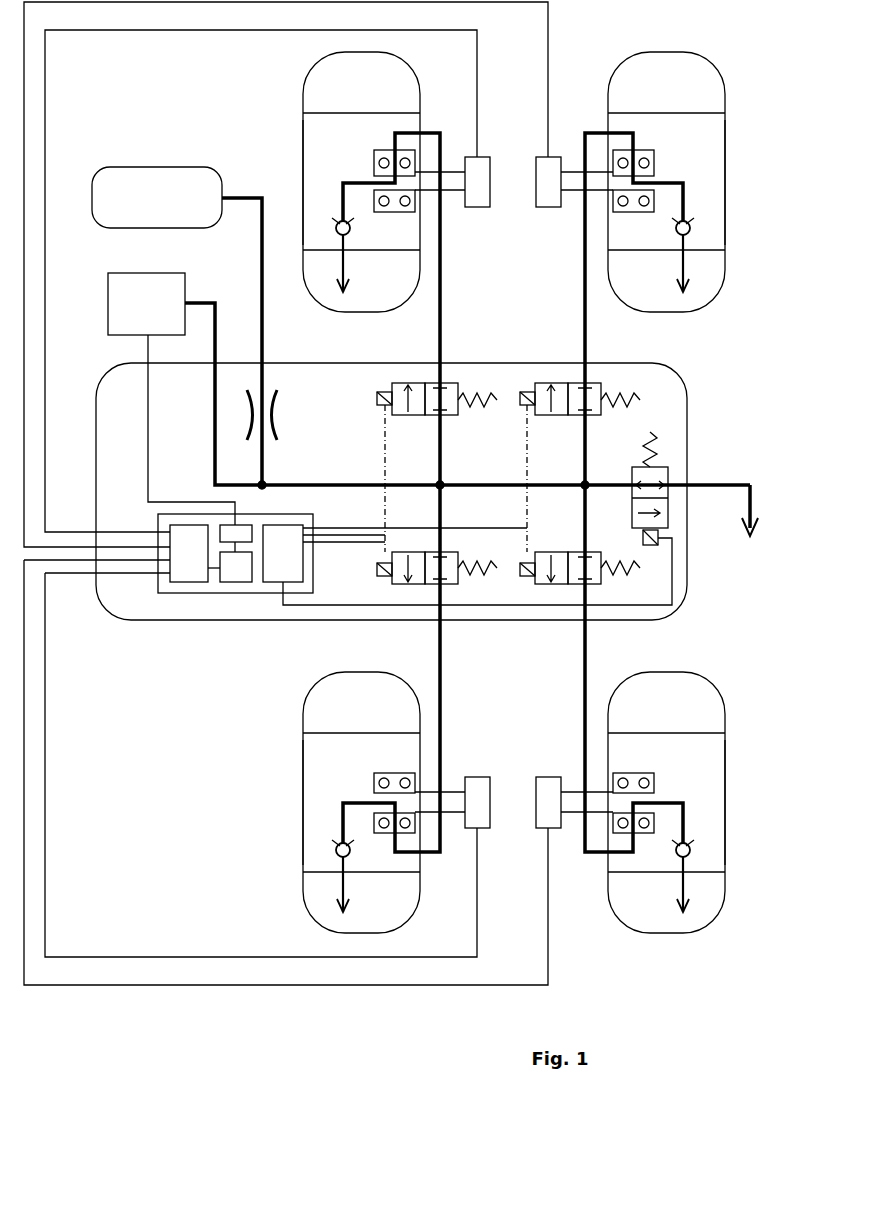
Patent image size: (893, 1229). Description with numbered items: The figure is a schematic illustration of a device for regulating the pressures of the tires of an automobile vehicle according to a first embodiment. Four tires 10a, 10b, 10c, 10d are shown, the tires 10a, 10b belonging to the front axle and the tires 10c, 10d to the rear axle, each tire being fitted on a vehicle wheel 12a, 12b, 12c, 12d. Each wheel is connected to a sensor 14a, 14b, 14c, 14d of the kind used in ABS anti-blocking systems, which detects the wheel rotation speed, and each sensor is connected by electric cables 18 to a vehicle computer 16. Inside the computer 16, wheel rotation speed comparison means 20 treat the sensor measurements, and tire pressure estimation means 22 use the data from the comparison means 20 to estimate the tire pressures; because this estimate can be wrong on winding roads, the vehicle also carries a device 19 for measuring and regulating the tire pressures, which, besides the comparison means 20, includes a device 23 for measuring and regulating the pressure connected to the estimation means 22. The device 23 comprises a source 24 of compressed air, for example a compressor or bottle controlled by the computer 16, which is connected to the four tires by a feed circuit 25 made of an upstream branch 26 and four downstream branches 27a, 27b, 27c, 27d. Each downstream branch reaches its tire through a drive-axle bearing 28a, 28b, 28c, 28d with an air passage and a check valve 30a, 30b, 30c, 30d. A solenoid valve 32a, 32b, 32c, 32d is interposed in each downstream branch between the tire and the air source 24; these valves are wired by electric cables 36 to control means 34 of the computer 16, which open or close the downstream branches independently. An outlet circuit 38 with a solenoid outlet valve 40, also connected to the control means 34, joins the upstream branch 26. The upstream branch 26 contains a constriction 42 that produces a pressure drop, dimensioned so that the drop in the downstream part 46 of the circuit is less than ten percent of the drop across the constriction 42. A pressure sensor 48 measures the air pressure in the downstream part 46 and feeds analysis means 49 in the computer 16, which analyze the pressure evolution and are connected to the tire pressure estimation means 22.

The tire 10a is at (330, 70).
The tire 10b is at (652, 80).
The tire 10c is at (322, 906).
The tire 10d is at (660, 900).
The vehicle wheel 12a is at (325, 136).
The vehicle wheel 12b is at (700, 130).
The vehicle wheel 12c is at (328, 756).
The vehicle wheel 12d is at (700, 748).
The sensor 14a is at (481, 180).
The sensor 14b is at (548, 198).
The sensor 14c is at (483, 788).
The sensor 14d is at (548, 787).
The vehicle computer 16 is at (174, 590).
The electric cables 18 is at (24, 243).
The device for measuring and regulating the tire pressures 19 is at (702, 346).
The wheel rotation speed comparison means 20 is at (195, 545).
The tire pressure estimation means 22 is at (239, 572).
The device for measuring and regulating the pressure 23 is at (720, 622).
The source of compressed air 24 is at (157, 190).
The feed circuit 25 is at (260, 230).
The upstream branch 26 is at (266, 322).
The downstream branch 27a is at (443, 260).
The downstream branch 27b is at (582, 302).
The downstream branch 27c is at (443, 645).
The downstream branch 27d is at (587, 663).
The bearing with air passage 28a is at (405, 188).
The bearing with air passage 28b is at (658, 200).
The bearing with air passage 28c is at (383, 797).
The bearing with air passage 28d is at (645, 797).
The check valve 30a is at (335, 220).
The check valve 30b is at (695, 225).
The check valve 30c is at (333, 840).
The check valve 30d is at (695, 842).
The solenoid valve 32a is at (425, 418).
The solenoid valve 32b is at (605, 430).
The solenoid valve 32c is at (430, 588).
The solenoid valve 32d is at (608, 590).
The control means 34 is at (277, 572).
The electric cables 36 is at (400, 540).
The outlet circuit 38 is at (728, 485).
The solenoid outlet valve 40 is at (672, 465).
The constriction 42 is at (276, 433).
The downstream part of the circuit 46 is at (440, 462).
The pressure sensor 48 is at (171, 399).
The analysis means 49 is at (245, 530).